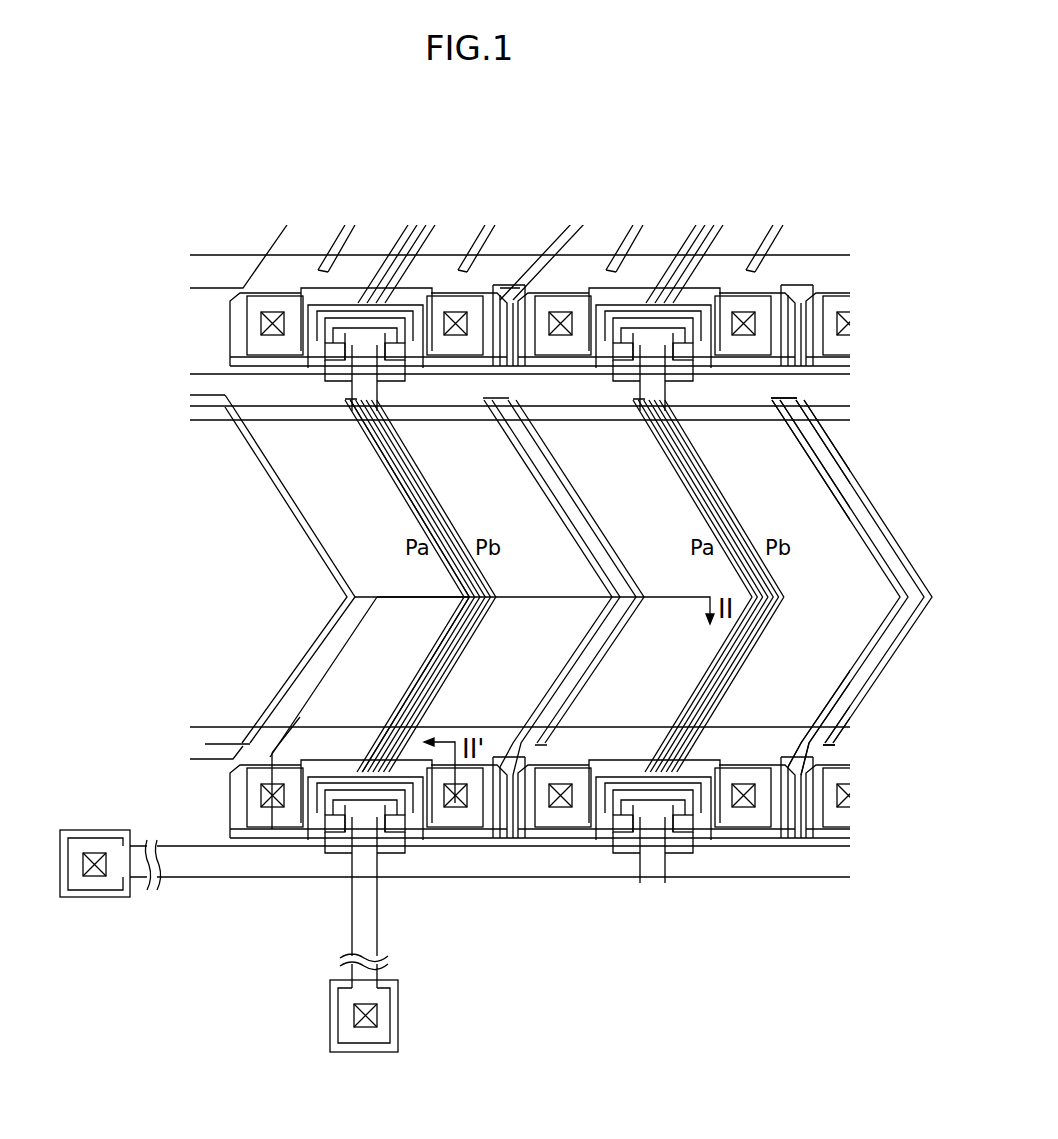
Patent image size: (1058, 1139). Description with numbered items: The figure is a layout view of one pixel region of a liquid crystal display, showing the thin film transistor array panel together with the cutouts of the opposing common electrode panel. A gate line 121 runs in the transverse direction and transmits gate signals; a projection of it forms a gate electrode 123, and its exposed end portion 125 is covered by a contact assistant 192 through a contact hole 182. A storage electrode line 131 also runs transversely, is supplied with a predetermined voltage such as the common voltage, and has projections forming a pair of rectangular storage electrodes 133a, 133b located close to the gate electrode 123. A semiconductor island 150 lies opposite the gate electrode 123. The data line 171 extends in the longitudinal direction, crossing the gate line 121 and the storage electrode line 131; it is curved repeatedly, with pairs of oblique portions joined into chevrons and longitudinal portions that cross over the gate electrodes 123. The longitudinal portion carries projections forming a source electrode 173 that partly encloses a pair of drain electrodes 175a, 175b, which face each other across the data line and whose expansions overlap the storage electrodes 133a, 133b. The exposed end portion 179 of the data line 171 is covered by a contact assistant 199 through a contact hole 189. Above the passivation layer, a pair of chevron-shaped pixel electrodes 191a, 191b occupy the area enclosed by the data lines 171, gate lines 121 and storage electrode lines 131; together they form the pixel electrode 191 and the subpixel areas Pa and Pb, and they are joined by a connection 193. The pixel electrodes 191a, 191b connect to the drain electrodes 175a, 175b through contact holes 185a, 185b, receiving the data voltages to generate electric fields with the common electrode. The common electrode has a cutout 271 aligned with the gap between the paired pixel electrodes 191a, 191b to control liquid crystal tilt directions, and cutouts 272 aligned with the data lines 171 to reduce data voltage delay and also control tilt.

The gate line 121 is at (700, 877).
The gate electrode 123 is at (365, 833).
The end portion of gate line 125 is at (108, 897).
The storage electrode line 131 is at (195, 727).
The storage electrode 133a is at (272, 829).
The storage electrode 133b is at (493, 790).
The semiconductor island 150 is at (383, 880).
The data line 171 is at (410, 687).
The source electrode 173 is at (392, 845).
The drain electrode 175a is at (283, 845).
The drain electrode 175b is at (410, 852).
The end portion of data line 179 is at (337, 1013).
The contact hole 182 is at (93, 875).
The contact hole 185a is at (258, 795).
The contact hole 185b is at (463, 807).
The contact hole 189 is at (368, 1027).
The pixel electrode 191 is at (248, 556).
The pixel electrode 191a is at (345, 590).
The pixel electrode 191b is at (403, 500).
The contact assistant 192 is at (93, 830).
The connection 193 is at (472, 598).
The contact assistant 199 is at (390, 1052).
The cutout 271 is at (627, 553).
The cutout 272 is at (367, 437).